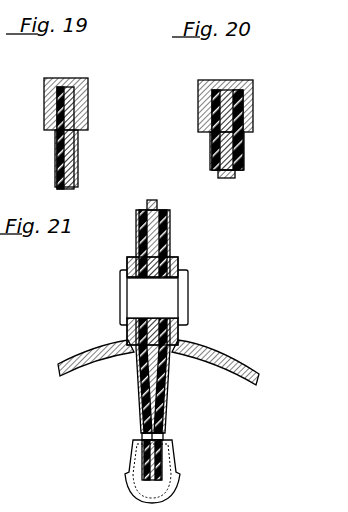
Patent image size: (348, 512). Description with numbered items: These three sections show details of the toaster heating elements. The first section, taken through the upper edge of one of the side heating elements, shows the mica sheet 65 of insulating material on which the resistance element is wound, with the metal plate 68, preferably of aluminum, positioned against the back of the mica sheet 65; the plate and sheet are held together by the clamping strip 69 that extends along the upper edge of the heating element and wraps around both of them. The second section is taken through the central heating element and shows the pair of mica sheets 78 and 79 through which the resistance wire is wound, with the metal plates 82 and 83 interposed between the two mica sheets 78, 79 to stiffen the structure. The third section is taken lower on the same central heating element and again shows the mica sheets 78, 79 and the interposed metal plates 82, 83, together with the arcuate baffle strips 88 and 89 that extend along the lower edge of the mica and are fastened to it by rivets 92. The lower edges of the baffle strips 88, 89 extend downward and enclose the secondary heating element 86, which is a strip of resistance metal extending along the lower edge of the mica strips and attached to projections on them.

In FIG. 19, the mica sheet 65 is at (58, 152).
In FIG. 19, the metal plate 68 is at (78, 152).
In FIG. 19, the clamping strip 69 is at (88, 86).
In FIG. 20, the mica sheet 78 is at (244, 151).
In FIG. 21, the mica sheet 78 is at (170, 221).
In FIG. 20, the mica sheet 79 is at (212, 138).
In FIG. 21, the mica sheet 79 is at (136, 225).
In FIG. 20, the metal plate 82 is at (230, 180).
In FIG. 21, the metal plate 82 is at (153, 201).
In FIG. 20, the metal plate 83 is at (226, 88).
In FIG. 21, the secondary heating element 86 is at (138, 494).
In FIG. 21, the arcuate baffle strip 88 is at (90, 352).
In FIG. 21, the arcuate baffle strip 89 is at (210, 354).
In FIG. 21, the rivets 92 is at (167, 294).